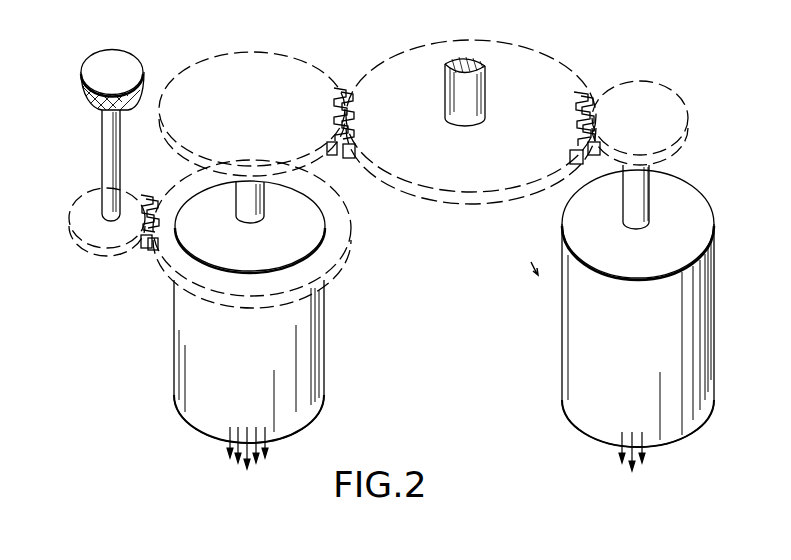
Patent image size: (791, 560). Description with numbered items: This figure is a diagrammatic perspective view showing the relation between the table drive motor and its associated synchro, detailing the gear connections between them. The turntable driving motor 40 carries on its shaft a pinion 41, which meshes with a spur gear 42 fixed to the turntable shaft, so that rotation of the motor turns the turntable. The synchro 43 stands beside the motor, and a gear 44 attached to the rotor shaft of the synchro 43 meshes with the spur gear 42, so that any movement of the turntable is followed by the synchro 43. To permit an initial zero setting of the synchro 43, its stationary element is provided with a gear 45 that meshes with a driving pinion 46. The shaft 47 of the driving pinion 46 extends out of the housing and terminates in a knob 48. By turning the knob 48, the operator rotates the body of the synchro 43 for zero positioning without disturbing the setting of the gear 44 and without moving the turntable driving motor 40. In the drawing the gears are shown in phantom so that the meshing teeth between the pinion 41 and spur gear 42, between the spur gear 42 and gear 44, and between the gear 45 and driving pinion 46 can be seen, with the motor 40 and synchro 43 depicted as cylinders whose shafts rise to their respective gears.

The turntable driving motor 40 is at (580, 302).
The pinion 41 is at (668, 104).
The spur gear 42 is at (398, 72).
The synchro 43 is at (325, 310).
The gear 44 is at (227, 76).
The gear 45 is at (171, 272).
The driving pinion 46 is at (100, 251).
The shaft 47 is at (106, 170).
The knob 48 is at (108, 55).